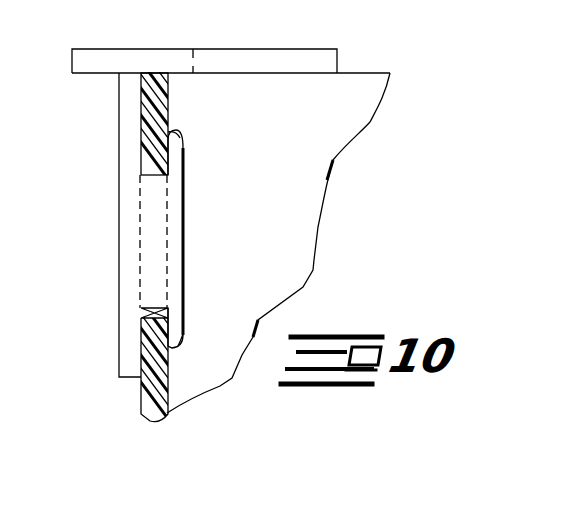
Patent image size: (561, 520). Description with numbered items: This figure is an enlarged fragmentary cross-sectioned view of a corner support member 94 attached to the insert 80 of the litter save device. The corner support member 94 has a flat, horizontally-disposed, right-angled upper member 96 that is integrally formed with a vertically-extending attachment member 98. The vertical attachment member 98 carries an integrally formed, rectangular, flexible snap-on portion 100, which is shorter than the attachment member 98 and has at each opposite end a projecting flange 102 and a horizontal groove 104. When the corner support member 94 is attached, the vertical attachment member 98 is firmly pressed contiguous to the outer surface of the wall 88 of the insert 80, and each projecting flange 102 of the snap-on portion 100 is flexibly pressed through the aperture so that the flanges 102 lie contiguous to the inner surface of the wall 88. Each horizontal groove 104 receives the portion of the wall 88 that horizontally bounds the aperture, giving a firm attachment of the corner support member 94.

The insert 80 is at (304, 287).
The wall 88 is at (325, 207).
The corner support member 94 is at (111, 268).
The upper member 96 is at (72, 58).
The vertical attachment member 98 is at (119, 148).
The snap-on portion 100 is at (185, 237).
The projecting flange 102 is at (178, 147).
The horizontal groove 104 is at (153, 170).